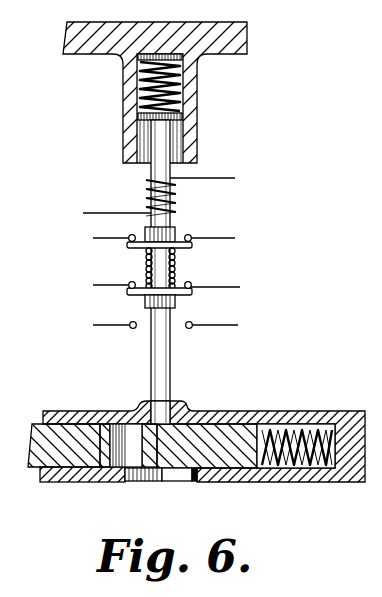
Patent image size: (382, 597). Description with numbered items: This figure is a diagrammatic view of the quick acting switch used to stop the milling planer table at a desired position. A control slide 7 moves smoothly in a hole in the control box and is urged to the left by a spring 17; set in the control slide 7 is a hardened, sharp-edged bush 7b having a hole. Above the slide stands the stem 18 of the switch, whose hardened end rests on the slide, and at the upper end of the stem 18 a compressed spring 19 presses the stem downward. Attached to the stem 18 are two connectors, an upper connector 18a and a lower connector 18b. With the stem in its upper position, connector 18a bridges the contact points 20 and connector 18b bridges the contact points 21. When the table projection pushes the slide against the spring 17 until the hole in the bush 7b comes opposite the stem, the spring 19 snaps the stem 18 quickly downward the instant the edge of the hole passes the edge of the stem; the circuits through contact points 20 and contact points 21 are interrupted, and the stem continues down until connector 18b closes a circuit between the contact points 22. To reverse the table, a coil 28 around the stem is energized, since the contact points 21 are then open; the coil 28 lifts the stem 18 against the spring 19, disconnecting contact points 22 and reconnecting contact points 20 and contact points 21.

The control slide 7 is at (33, 423).
The bush 7b is at (103, 467).
The spring 17 is at (327, 425).
The stem 18 is at (168, 372).
The connector 18a is at (192, 247).
The connector 18b is at (192, 295).
The spring 19 is at (137, 84).
The contact points 20 is at (129, 237).
The contact points 21 is at (129, 285).
The contact points 22 is at (130, 328).
The coil 28 is at (150, 199).